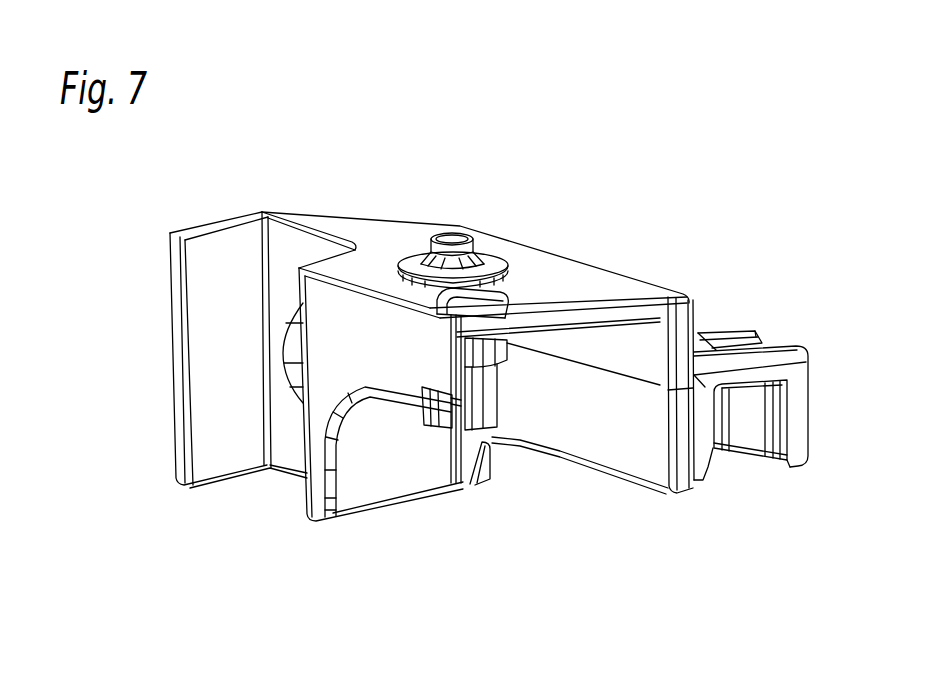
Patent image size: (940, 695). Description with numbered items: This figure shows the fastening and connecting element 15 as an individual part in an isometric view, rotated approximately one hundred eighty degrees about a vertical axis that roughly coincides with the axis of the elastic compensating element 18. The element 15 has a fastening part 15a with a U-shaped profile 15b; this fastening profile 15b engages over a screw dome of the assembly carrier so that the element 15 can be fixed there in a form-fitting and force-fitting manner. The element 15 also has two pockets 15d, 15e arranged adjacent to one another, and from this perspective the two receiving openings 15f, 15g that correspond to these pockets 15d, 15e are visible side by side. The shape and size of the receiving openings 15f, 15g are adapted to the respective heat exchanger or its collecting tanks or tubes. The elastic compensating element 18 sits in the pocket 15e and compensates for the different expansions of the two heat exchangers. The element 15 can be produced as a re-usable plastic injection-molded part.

The fastening and connecting element 15 is at (650, 198).
The fastening part 15a is at (256, 200).
The U-shaped profile 15b is at (226, 447).
The pocket 15d is at (766, 358).
The pocket 15e is at (547, 278).
The receiving opening 15f is at (732, 455).
The receiving opening 15g is at (402, 455).
The elastic compensating element 18 is at (455, 234).